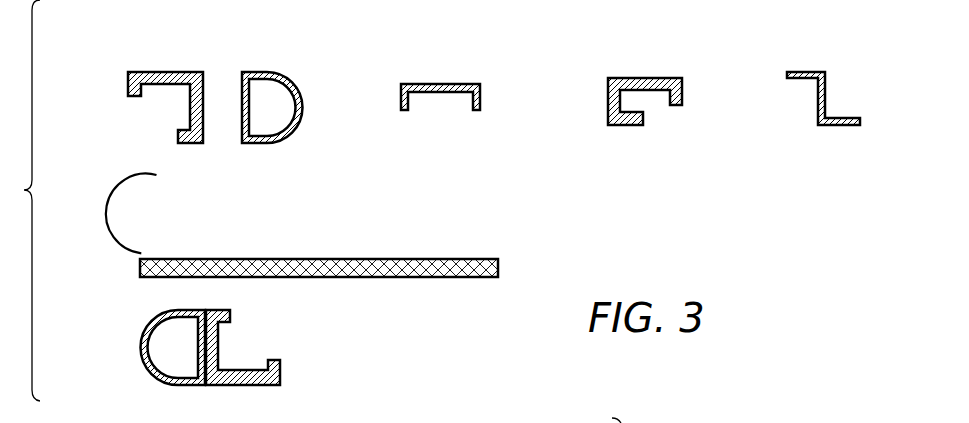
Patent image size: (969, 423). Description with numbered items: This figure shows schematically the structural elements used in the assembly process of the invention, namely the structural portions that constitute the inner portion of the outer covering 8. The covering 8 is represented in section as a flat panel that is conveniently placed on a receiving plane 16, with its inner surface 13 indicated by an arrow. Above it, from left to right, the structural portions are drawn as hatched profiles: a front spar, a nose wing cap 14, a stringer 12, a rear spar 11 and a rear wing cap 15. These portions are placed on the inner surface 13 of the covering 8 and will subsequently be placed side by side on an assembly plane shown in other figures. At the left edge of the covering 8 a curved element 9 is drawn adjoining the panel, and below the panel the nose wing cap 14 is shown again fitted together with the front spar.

The outer covering 8 is at (261, 259).
The curved profile section 9 is at (118, 236).
The rear spar 11 is at (633, 78).
The stringer 12 is at (437, 84).
The inner surface 13 is at (400, 241).
The nose wing cap 14 is at (252, 72).
The rear wing cap 15 is at (811, 72).
The receiving plane 16 is at (153, 278).